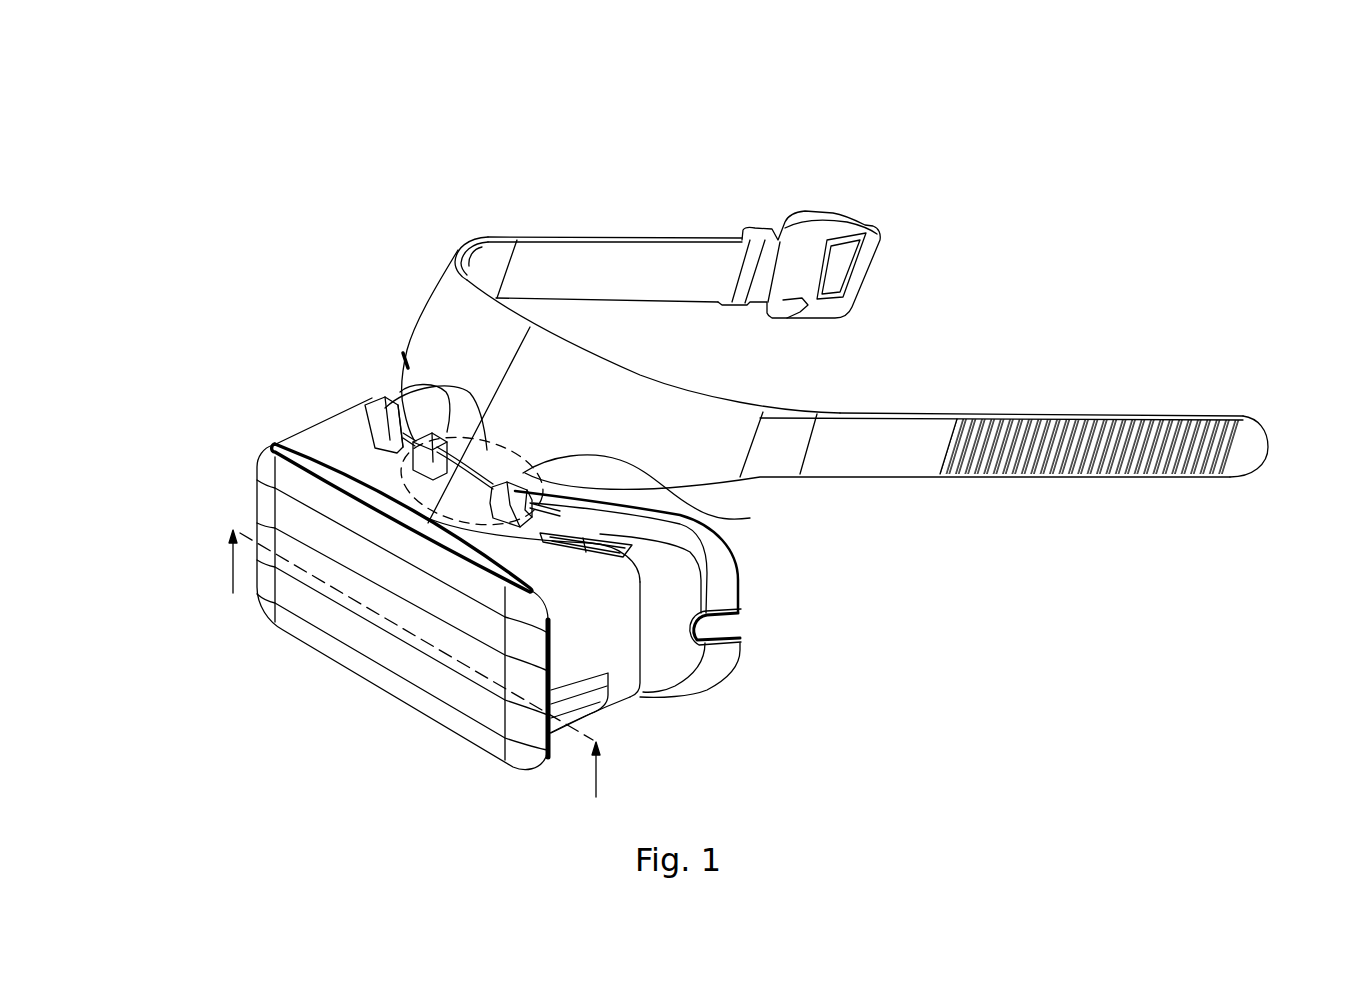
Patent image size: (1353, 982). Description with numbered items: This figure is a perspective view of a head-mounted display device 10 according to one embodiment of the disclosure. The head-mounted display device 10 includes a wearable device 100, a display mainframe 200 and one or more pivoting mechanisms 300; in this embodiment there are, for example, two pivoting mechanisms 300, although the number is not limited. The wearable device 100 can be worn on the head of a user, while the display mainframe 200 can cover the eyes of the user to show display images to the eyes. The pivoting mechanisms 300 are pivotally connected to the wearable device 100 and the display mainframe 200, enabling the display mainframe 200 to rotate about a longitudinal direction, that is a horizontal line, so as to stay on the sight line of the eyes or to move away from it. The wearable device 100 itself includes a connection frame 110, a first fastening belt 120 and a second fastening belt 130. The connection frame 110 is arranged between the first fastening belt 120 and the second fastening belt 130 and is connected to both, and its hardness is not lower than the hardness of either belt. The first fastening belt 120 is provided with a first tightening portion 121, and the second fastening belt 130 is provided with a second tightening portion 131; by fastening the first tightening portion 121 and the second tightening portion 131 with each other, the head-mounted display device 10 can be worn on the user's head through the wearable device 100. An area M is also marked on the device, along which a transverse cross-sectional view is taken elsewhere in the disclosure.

The head-mounted display device 10 is at (307, 66).
The wearable device 100 is at (618, 133).
The connection frame 110 is at (433, 327).
The first fastening belt 120 is at (505, 247).
The first tightening portion 121 is at (847, 213).
The second fastening belt 130 is at (850, 437).
The second tightening portion 131 is at (1207, 418).
The display mainframe 200 is at (267, 525).
The pivoting mechanism 300 is at (430, 405).
The area M is at (748, 518).